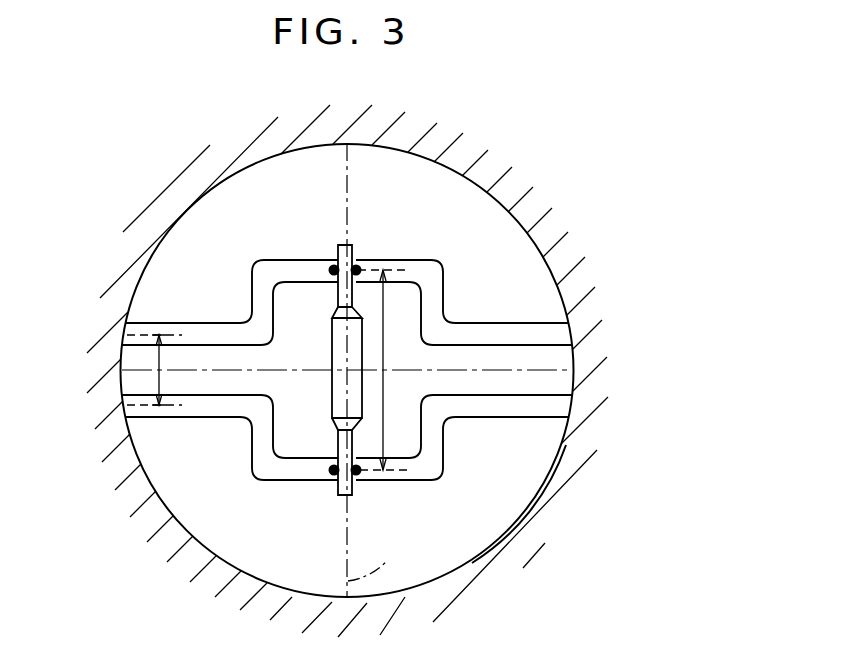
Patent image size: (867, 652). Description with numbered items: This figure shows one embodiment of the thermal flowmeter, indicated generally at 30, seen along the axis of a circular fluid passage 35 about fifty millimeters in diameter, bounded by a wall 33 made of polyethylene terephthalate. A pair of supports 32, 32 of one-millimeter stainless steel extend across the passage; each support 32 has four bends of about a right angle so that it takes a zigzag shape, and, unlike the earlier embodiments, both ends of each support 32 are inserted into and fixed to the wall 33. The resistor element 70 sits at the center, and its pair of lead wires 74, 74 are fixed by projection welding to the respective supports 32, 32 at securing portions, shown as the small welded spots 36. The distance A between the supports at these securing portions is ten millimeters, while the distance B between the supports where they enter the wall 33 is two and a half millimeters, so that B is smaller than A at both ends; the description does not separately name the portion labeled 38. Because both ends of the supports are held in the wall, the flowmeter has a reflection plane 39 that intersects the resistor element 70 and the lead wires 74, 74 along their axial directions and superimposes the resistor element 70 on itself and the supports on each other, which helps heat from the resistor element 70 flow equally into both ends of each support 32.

The flow control valve assembly 30 is at (373, 371).
The support 32 is at (188, 325).
The wall 33 is at (132, 478).
The fluid passage 35 is at (493, 502).
The orifices 36 is at (357, 264).
The outlet passage 38 is at (480, 368).
The reflection plane 39 is at (382, 556).
The resistor element 70 is at (312, 413).
The lead wire 74 is at (339, 257).